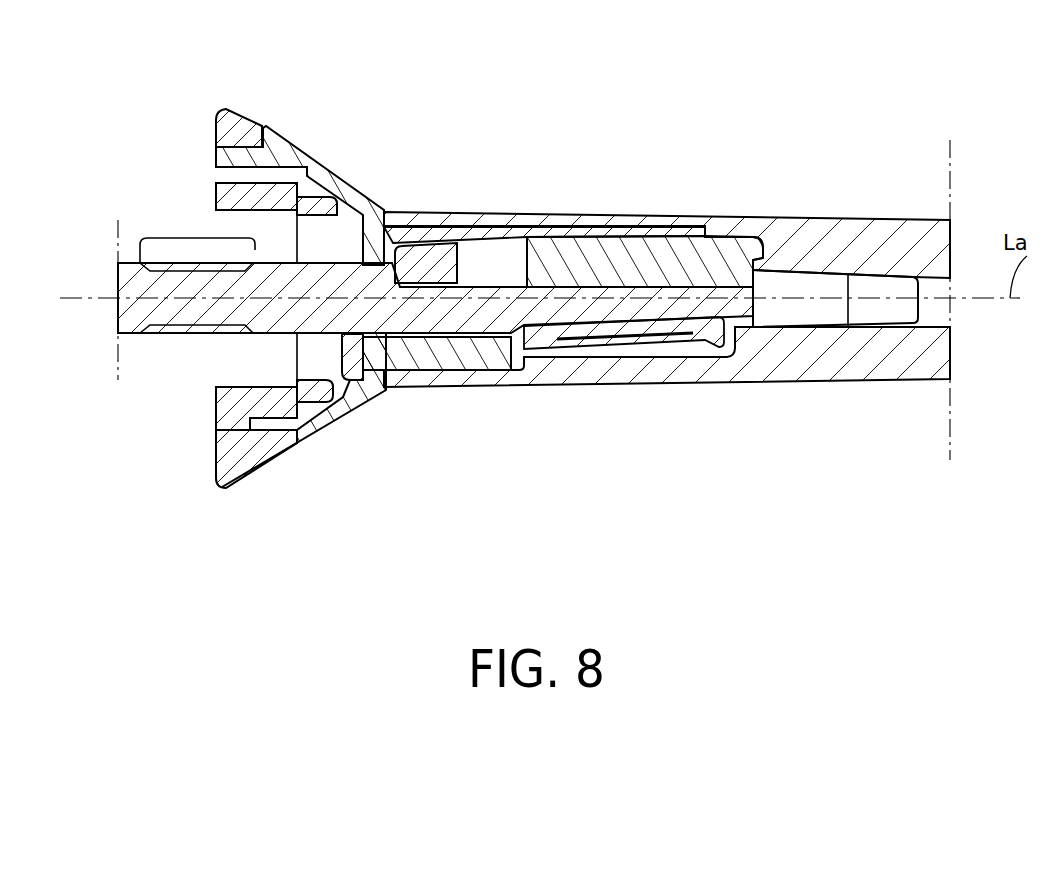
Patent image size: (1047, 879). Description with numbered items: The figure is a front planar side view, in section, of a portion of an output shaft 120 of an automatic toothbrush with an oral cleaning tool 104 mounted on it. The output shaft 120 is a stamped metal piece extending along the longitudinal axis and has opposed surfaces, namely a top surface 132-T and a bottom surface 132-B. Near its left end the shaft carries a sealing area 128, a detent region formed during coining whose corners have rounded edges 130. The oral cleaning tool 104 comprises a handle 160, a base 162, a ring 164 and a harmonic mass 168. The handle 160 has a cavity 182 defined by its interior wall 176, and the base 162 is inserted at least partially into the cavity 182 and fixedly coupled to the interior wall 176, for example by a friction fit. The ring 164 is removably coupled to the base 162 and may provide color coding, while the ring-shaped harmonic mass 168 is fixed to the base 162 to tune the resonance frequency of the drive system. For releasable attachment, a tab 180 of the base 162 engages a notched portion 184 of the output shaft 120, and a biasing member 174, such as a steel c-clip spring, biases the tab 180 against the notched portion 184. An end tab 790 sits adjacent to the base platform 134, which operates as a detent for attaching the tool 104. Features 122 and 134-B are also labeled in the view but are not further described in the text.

The oral cleaning tool 104 is at (817, 188).
The output shaft 120 is at (118, 284).
The distal end of shaft 122 is at (708, 302).
The sealing area 128 is at (193, 237).
The rounded edges 130 is at (155, 270).
The top surface 132-T is at (340, 213).
The bottom surface 132-B is at (263, 340).
The base platform 134 is at (400, 262).
The bottom tongue 134-B is at (352, 385).
The handle 160 is at (682, 214).
The base 162 is at (283, 135).
The ring 164 is at (245, 108).
The harmonic mass 168 is at (217, 415).
The biasing member 174 is at (567, 350).
The interior wall 176 is at (850, 300).
The tab 180 is at (613, 330).
The cavity 182 is at (875, 283).
The notched portion 184 is at (610, 285).
The end tab 790 is at (468, 245).